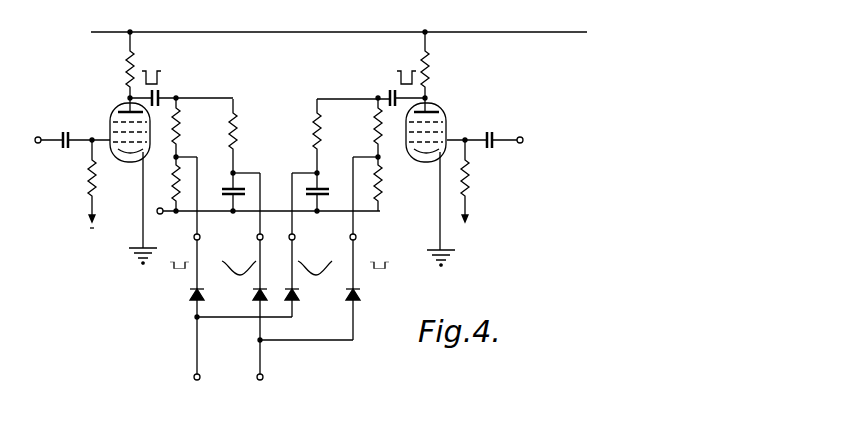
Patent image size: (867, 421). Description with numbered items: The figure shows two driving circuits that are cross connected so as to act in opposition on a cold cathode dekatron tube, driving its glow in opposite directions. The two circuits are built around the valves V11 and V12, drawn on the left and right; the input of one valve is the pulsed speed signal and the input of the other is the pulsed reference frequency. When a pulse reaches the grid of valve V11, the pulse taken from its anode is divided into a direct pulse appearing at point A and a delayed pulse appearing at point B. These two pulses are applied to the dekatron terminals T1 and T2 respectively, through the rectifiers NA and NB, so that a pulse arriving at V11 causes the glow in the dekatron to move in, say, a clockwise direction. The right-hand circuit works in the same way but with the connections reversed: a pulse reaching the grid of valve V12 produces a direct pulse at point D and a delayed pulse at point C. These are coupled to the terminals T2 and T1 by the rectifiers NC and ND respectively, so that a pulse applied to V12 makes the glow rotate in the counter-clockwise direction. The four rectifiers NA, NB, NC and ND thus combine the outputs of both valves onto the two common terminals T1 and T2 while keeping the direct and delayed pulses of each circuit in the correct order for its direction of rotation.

The valve V11 is at (114, 110).
The valve V12 is at (450, 105).
The direct pulse point A is at (189, 202).
The delayed pulse point B is at (253, 210).
The delayed pulse point C is at (298, 210).
The direct pulse point D is at (360, 202).
The rectifier NA is at (183, 307).
The rectifier NB is at (248, 307).
The rectifier NC is at (304, 278).
The rectifier ND is at (365, 290).
The dekatron tube terminal T1 is at (201, 389).
The dekatron tube terminal T2 is at (263, 389).